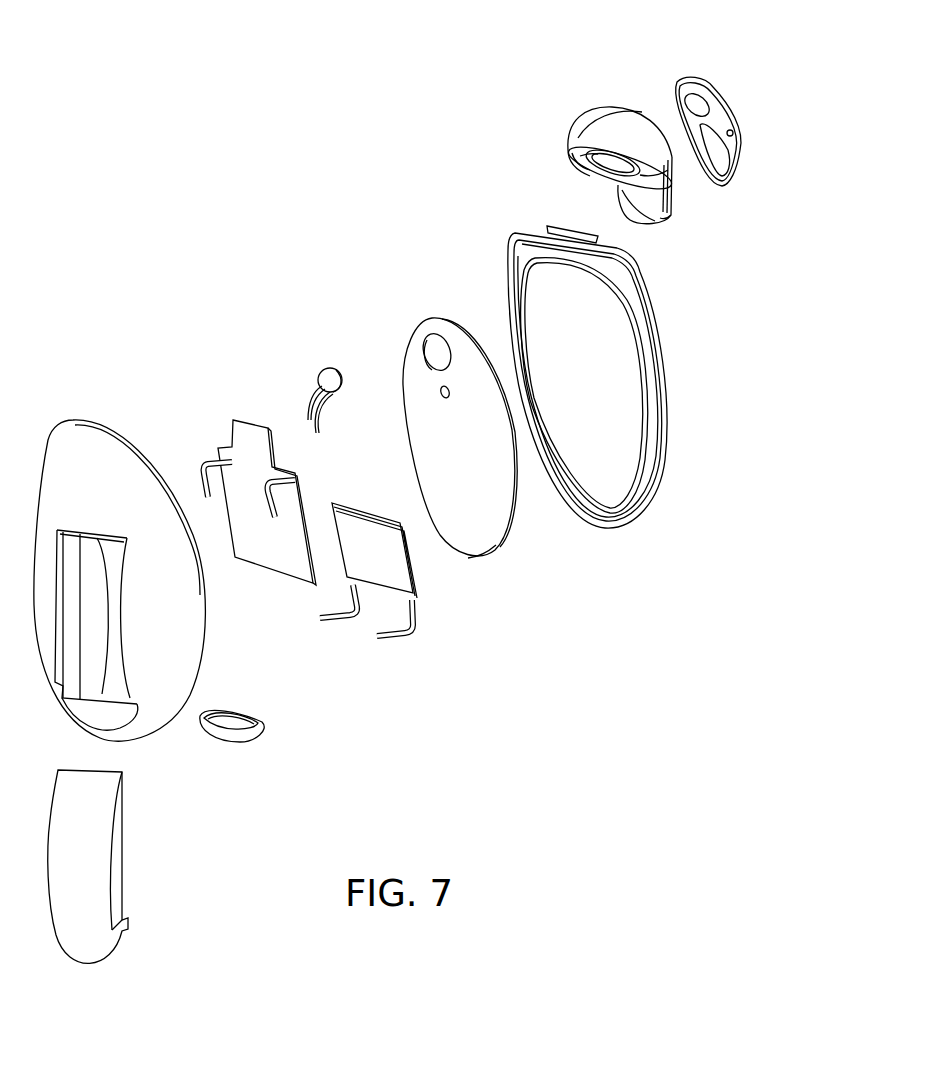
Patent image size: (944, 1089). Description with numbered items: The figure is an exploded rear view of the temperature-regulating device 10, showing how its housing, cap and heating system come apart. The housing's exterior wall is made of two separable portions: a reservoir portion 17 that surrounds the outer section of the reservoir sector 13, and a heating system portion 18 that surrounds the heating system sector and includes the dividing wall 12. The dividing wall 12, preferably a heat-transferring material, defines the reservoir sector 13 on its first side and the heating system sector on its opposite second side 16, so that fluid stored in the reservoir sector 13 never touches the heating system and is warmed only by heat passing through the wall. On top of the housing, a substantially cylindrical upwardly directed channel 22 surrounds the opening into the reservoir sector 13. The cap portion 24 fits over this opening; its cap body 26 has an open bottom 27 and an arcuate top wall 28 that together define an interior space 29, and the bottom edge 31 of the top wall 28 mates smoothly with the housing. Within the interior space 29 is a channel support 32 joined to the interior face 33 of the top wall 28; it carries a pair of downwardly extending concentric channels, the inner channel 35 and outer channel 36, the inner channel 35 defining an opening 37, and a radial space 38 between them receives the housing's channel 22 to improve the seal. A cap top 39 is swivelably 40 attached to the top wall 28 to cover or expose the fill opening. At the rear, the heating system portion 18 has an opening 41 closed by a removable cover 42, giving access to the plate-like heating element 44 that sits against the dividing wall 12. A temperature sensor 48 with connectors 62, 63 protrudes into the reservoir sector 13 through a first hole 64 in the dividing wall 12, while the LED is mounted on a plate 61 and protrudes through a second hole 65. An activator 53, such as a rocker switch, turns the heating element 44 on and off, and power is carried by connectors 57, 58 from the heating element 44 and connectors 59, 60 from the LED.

The temperature-regulating device 10 is at (214, 170).
The dividing wall 12 is at (473, 475).
The reservoir sector 13 is at (593, 472).
The second side 16 is at (480, 543).
The reservoir portion 17 is at (645, 305).
The heating system portion 18 is at (190, 653).
The channel 22 is at (546, 230).
The cap portion 24 is at (656, 61).
The cap body 26 is at (619, 141).
The open bottom 27 is at (568, 158).
The top wall 28 is at (592, 122).
The interior space 29 is at (587, 167).
The bottom edge 31 is at (673, 213).
The channel support 32 is at (637, 198).
The interior face 33 is at (580, 157).
The inner channel 35 is at (616, 165).
The outer channel 36 is at (637, 172).
The opening 37 is at (665, 192).
The radial space 38 is at (647, 173).
The cap top 39 is at (724, 77).
The swivel 40 is at (733, 133).
The opening 41 is at (115, 582).
The cover 42 is at (90, 875).
The heating element 44 is at (418, 556).
The temperature sensor 48 is at (335, 362).
The activator 53 is at (268, 716).
The connector 57 is at (348, 618).
The connector 58 is at (405, 630).
The connector 59 is at (210, 463).
The connector 60 is at (287, 475).
The plate 61 is at (222, 445).
The connector 62 is at (316, 417).
The connector 63 is at (310, 400).
The first hole 64 is at (433, 349).
The second hole 65 is at (443, 391).